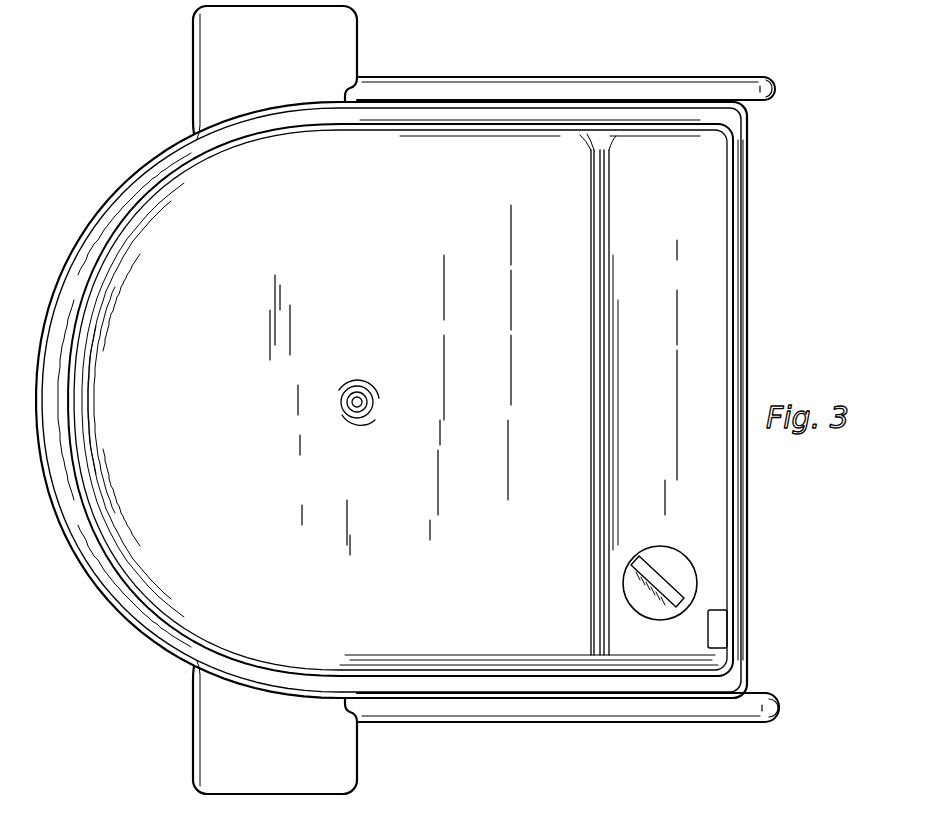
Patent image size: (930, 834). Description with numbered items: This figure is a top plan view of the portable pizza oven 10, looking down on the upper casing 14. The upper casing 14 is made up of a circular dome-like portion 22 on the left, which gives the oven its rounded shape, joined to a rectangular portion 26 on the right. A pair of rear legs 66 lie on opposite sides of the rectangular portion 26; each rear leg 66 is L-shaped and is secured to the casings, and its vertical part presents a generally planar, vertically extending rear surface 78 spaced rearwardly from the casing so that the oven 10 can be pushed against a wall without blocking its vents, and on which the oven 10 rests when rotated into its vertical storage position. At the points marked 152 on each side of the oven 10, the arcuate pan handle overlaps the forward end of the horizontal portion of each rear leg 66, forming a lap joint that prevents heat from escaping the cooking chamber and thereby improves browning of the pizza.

The portable pizza oven 10 is at (550, 49).
The upper casing 14 is at (190, 578).
The circular dome-like portion 22 is at (203, 205).
The rectangular portion 26 is at (760, 228).
The rear legs 66 is at (688, 74).
The rear surface 78 is at (776, 89).
The lap joint 152 is at (330, 88).